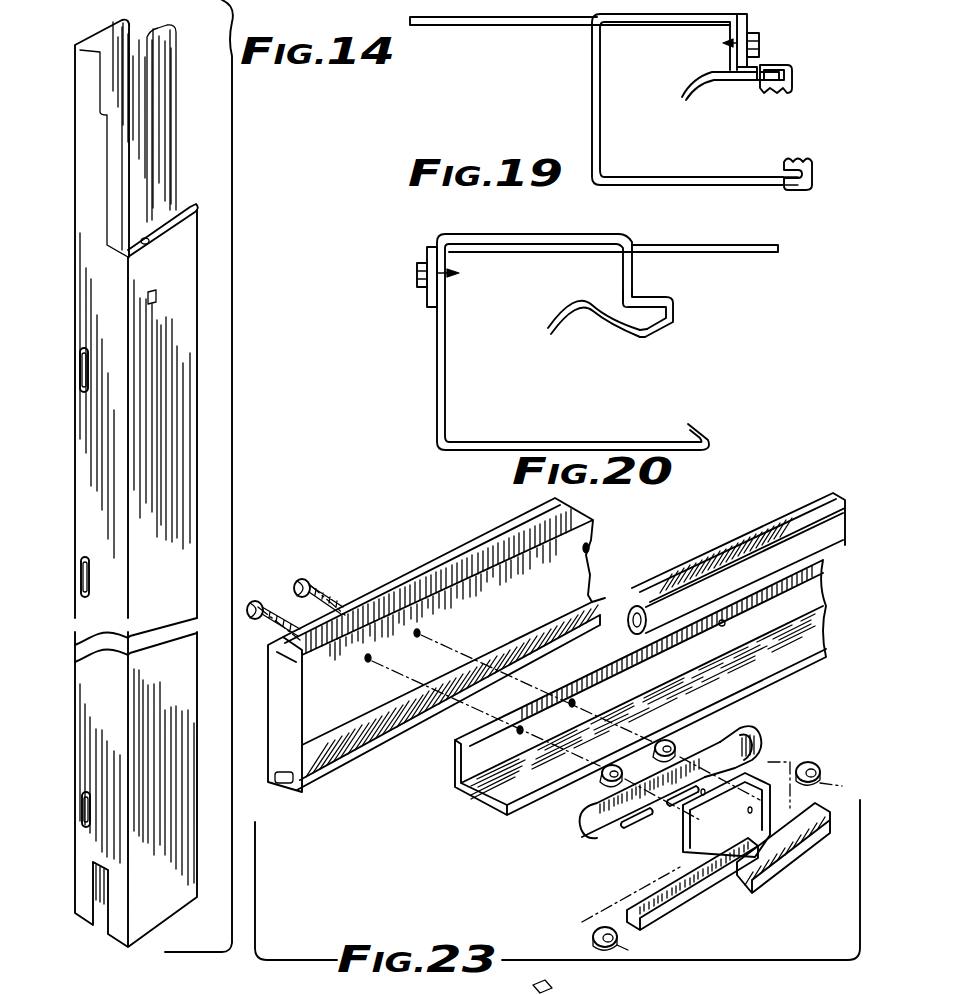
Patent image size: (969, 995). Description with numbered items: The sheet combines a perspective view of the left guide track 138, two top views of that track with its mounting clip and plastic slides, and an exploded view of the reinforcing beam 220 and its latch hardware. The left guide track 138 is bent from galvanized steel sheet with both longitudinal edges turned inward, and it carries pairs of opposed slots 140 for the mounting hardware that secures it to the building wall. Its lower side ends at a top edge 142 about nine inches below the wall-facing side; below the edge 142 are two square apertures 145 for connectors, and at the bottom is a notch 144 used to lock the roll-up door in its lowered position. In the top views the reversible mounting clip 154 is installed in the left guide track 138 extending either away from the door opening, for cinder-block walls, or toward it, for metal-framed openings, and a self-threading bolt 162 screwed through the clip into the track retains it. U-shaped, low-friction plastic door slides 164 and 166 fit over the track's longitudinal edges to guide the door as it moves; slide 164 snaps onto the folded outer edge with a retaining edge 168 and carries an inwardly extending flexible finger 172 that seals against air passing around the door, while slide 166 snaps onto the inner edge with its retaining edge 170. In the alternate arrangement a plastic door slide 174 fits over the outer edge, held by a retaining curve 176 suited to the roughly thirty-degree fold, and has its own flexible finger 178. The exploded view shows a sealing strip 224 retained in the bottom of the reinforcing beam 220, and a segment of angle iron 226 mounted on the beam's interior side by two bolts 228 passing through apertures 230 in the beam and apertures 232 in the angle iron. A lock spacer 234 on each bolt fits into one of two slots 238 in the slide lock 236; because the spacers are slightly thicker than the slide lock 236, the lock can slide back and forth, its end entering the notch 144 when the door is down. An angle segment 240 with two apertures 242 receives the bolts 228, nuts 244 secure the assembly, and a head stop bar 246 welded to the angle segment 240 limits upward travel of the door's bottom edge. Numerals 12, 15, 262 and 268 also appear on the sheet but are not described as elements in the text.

In FIG. 14, the display unit 12 is at (158, 994).
In FIG. 14, the section line 15 is at (212, 522).
In FIG. 14, the left guide track 138 is at (60, 885).
In FIG. 19, the left guide track 138 is at (592, 124).
In FIG. 20, the left guide track 138 is at (437, 410).
In FIG. 14, the slots 140 is at (80, 365).
In FIG. 14, the top edge 142 is at (147, 245).
In FIG. 14, the notch 144 is at (106, 925).
In FIG. 14, the square apertures 145 is at (158, 340).
In FIG. 19, the reversible mounting clip 154 is at (497, 26).
In FIG. 20, the reversible mounting clip 154 is at (743, 253).
In FIG. 19, the self-threading bolt 162 is at (762, 48).
In FIG. 20, the self-threading bolt 162 is at (418, 265).
In FIG. 19, the plastic door slide 164 is at (793, 76).
In FIG. 19, the plastic door slide 166 is at (813, 160).
In FIG. 19, the retaining edge 168 is at (760, 90).
In FIG. 19, the retaining edge 170 is at (782, 167).
In FIG. 19, the flexible finger 172 is at (702, 86).
In FIG. 20, the plastic door slide 174 is at (674, 310).
In FIG. 20, the retaining curve 176 is at (637, 343).
In FIG. 20, the flexible finger 178 is at (575, 322).
In FIG. 23, the reinforcing beam 220 is at (596, 555).
In FIG. 23, the sealing strip 224 is at (628, 610).
In FIG. 23, the segment of angle iron 226 is at (452, 752).
In FIG. 23, the bolts 228 is at (297, 580).
In FIG. 23, the apertures 230 is at (366, 662).
In FIG. 23, the apertures 232 is at (576, 702).
In FIG. 23, the lock spacer 234 is at (672, 745).
In FIG. 23, the slide lock 236 is at (760, 730).
In FIG. 23, the slots 238 is at (720, 738).
In FIG. 23, the angle segment 240 is at (790, 803).
In FIG. 23, the apertures 242 is at (783, 775).
In FIG. 23, the nuts 244 is at (818, 762).
In FIG. 23, the head stop bar 246 is at (688, 900).
In FIG. 23, the member 262 is at (500, 987).
In FIG. 23, the member 268 is at (555, 982).